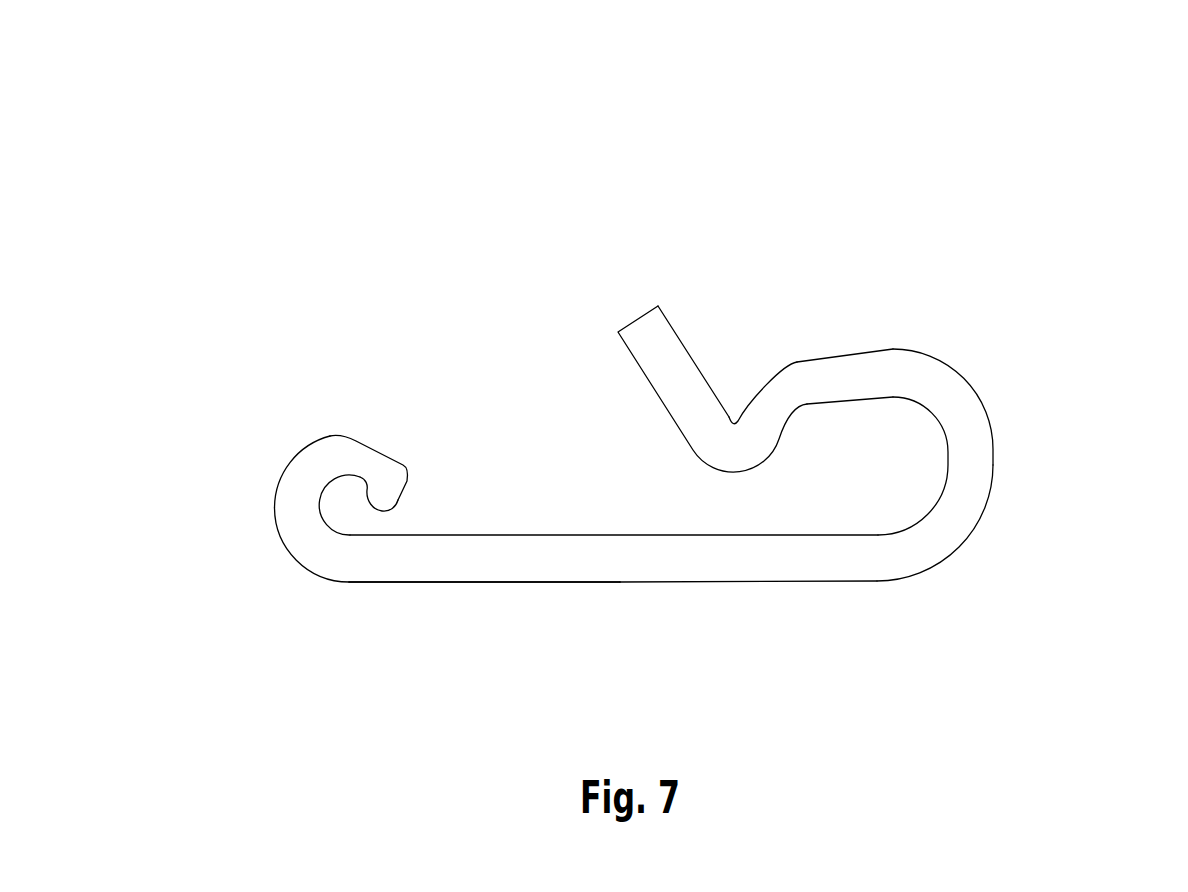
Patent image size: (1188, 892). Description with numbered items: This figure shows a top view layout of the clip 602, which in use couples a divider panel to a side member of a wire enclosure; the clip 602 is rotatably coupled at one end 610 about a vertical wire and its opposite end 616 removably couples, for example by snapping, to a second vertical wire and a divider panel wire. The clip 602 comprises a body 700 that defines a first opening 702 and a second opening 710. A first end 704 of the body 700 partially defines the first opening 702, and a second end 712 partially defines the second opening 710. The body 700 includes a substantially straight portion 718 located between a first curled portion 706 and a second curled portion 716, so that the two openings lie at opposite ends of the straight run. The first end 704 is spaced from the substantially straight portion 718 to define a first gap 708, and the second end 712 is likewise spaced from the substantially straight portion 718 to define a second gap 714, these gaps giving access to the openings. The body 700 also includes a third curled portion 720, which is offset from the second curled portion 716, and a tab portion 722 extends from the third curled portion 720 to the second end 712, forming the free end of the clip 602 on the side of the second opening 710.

The clip 602 is at (783, 173).
The one end of the clip 610 is at (267, 455).
The opposite end of the clip 616 is at (1020, 450).
The body 700 is at (687, 582).
The first opening 702 is at (350, 497).
The first end 704 is at (386, 511).
The first curled portion 706 is at (275, 540).
The first gap 708 is at (378, 518).
The second opening 710 is at (857, 497).
The second end 712 is at (633, 322).
The second gap 714 is at (712, 501).
The second curled portion 716 is at (980, 535).
The substantially straight portion 718 is at (549, 582).
The third curled portion 720 is at (733, 417).
The tab portion 722 is at (688, 352).